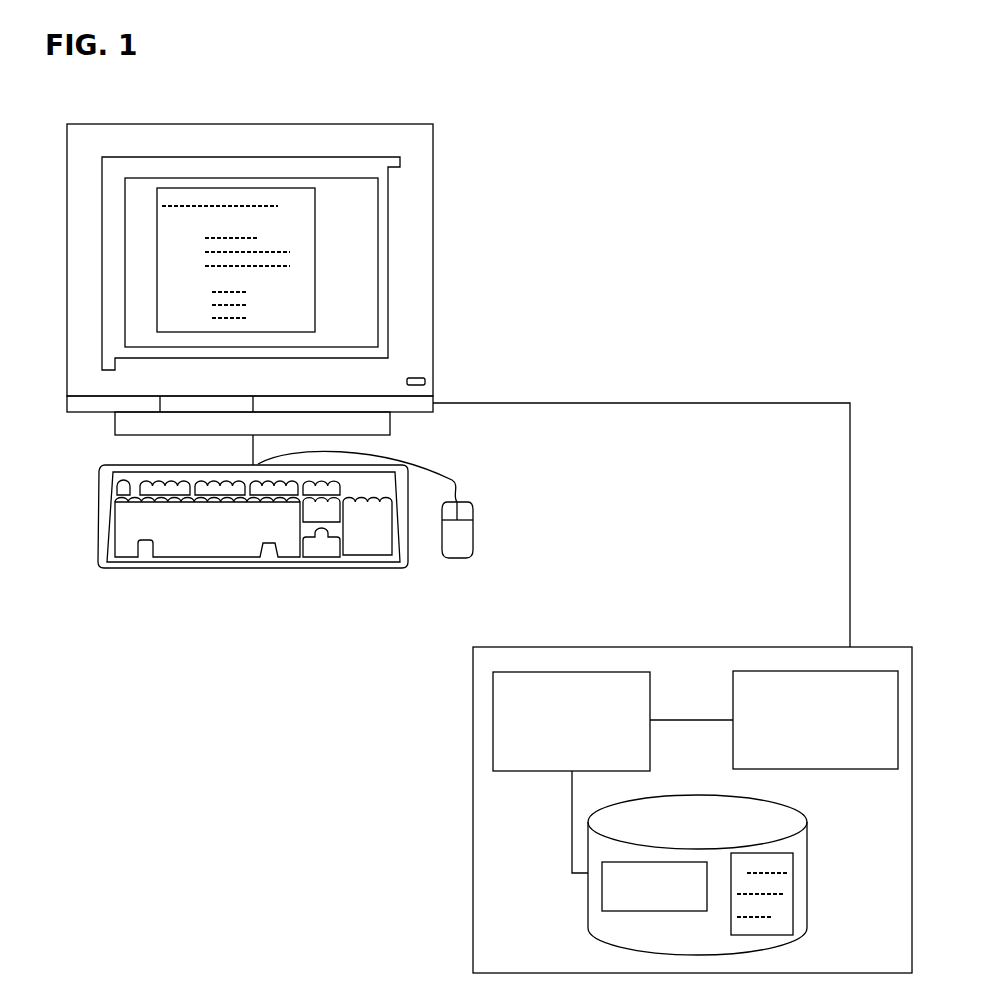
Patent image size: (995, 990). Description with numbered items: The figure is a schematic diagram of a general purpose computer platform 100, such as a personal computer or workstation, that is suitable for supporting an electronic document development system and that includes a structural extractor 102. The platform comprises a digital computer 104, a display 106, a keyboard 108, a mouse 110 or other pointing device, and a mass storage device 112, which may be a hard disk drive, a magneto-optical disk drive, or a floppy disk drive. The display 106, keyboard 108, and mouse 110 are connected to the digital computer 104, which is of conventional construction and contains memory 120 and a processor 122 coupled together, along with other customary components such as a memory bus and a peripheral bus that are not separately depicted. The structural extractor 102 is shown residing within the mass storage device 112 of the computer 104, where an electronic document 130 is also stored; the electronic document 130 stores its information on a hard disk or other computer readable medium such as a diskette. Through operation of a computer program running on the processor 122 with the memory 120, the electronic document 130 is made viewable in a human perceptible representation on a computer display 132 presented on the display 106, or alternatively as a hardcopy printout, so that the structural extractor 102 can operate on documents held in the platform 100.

The general purpose computer platform 100 is at (494, 68).
The structural extractor 102 is at (628, 911).
The digital computer 104 is at (473, 737).
The display 106 is at (412, 220).
The keyboard 108 is at (253, 568).
The mouse 110 is at (463, 508).
The mass storage device 112 is at (808, 873).
The memory 120 is at (650, 743).
The processor 122 is at (732, 695).
The electronic document 130 is at (787, 903).
The computer display 132 is at (290, 282).